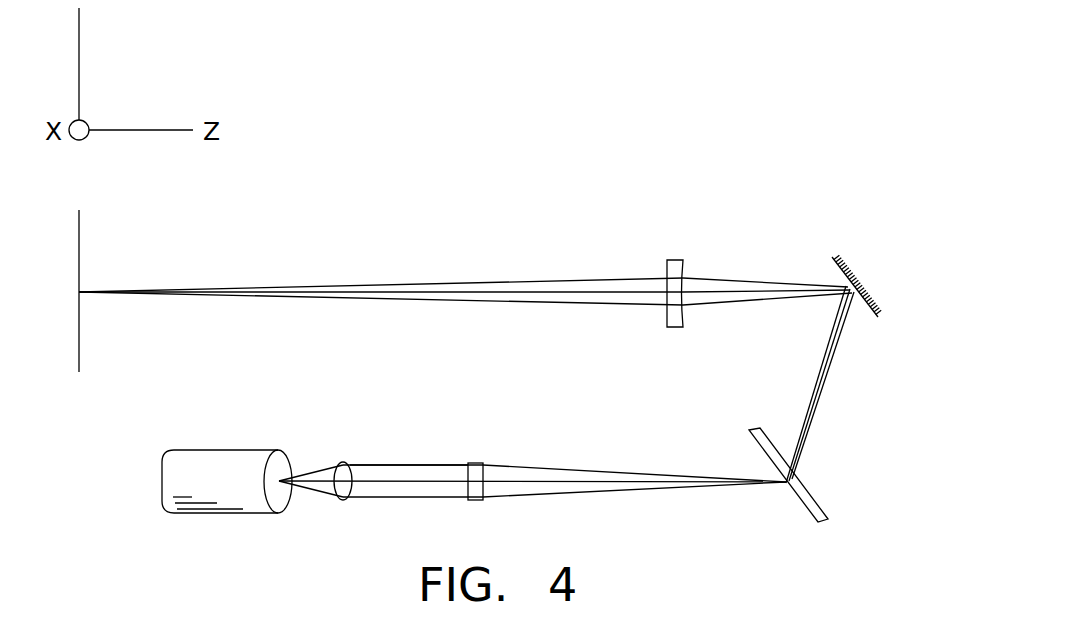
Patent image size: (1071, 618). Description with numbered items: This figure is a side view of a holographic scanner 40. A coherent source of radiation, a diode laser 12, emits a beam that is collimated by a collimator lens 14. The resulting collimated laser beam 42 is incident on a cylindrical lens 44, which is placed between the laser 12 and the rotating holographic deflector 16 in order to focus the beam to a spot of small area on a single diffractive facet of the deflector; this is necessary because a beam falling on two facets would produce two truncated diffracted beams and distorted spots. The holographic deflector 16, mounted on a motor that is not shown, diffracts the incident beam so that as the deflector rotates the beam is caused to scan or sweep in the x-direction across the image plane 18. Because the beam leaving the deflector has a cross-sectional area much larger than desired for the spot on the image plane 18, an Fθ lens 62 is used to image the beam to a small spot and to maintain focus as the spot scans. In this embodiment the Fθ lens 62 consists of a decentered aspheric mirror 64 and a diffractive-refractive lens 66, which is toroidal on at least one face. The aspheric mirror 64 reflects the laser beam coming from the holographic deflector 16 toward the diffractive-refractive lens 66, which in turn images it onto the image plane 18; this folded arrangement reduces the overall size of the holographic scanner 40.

The diode laser 12 is at (230, 450).
The collimator lens 14 is at (343, 462).
The rotating holographic deflector 16 is at (800, 502).
The image plane 18 is at (79, 240).
The holographic scanner 40 is at (446, 163).
The collimated laser beam 42 is at (405, 465).
The cylindrical lens 44 is at (476, 463).
The Fθ lens 62 is at (883, 226).
The decentered aspheric mirror 64 is at (873, 320).
The diffractive-refractive lens 66 is at (673, 327).